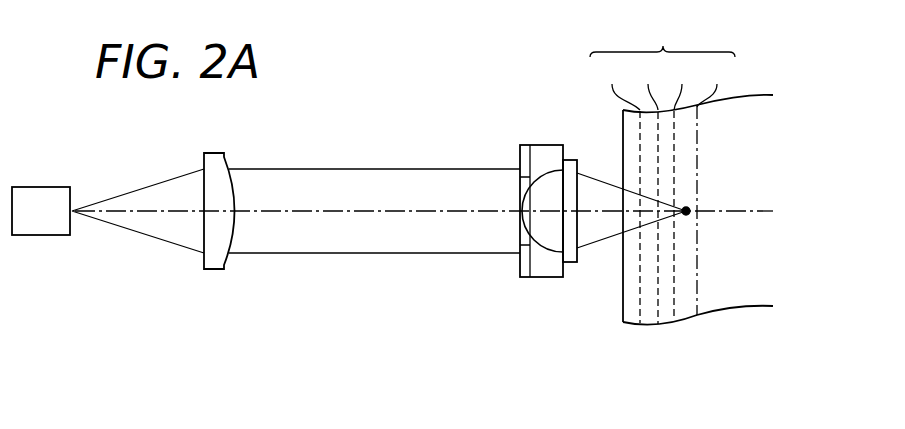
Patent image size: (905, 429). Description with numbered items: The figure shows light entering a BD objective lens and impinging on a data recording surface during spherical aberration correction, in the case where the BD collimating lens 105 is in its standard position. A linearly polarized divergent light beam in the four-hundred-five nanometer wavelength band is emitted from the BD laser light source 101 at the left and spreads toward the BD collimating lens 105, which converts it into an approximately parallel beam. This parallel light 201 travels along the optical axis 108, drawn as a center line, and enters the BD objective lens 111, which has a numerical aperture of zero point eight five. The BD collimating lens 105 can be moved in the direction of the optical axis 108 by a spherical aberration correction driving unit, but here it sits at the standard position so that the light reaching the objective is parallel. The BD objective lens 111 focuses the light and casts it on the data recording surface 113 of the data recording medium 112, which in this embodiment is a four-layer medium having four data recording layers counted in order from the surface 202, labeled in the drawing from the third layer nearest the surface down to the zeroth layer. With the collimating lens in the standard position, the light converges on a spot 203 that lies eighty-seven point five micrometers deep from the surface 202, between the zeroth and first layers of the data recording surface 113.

The BD laser light source 101 is at (41, 211).
The BD collimating lens 105 is at (213, 263).
The parallel light 201 is at (297, 169).
The optical axis 108 is at (412, 211).
The BD objective lens 111 is at (553, 243).
The surface 202 is at (623, 268).
The data recording surface 113 is at (662, 171).
The spot 203 is at (689, 215).
The data recording medium 112 is at (708, 315).